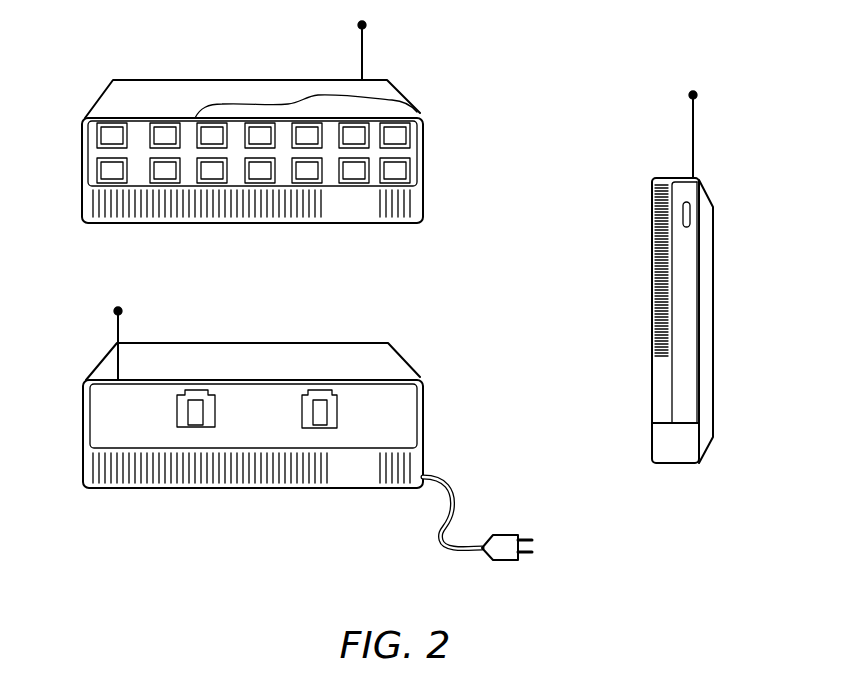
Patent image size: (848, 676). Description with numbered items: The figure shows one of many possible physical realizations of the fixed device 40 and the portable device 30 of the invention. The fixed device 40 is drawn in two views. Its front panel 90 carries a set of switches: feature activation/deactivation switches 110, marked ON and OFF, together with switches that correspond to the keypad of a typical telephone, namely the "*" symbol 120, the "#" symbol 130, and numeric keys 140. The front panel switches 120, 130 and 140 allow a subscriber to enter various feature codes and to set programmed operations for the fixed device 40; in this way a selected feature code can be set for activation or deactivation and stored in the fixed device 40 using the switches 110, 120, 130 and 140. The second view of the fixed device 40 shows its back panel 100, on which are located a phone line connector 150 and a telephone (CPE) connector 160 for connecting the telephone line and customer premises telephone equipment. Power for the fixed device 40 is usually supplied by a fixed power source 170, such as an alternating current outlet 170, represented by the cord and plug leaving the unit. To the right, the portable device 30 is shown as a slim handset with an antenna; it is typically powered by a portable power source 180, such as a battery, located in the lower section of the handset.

The portable device 30 is at (736, 272).
The fixed device 40 is at (470, 147).
The front panel 90 is at (330, 178).
The back panel 100 is at (412, 433).
The feature activation/deactivation switches 110 is at (93, 132).
The "*" symbol switch 120 is at (160, 122).
The "#" symbol switch 130 is at (167, 183).
The numeric keys 140 is at (305, 92).
The phone line connector 150 is at (177, 415).
The telephone (CPE) connector 160 is at (302, 415).
The fixed power source 170 is at (497, 561).
The portable power source 180 is at (673, 463).